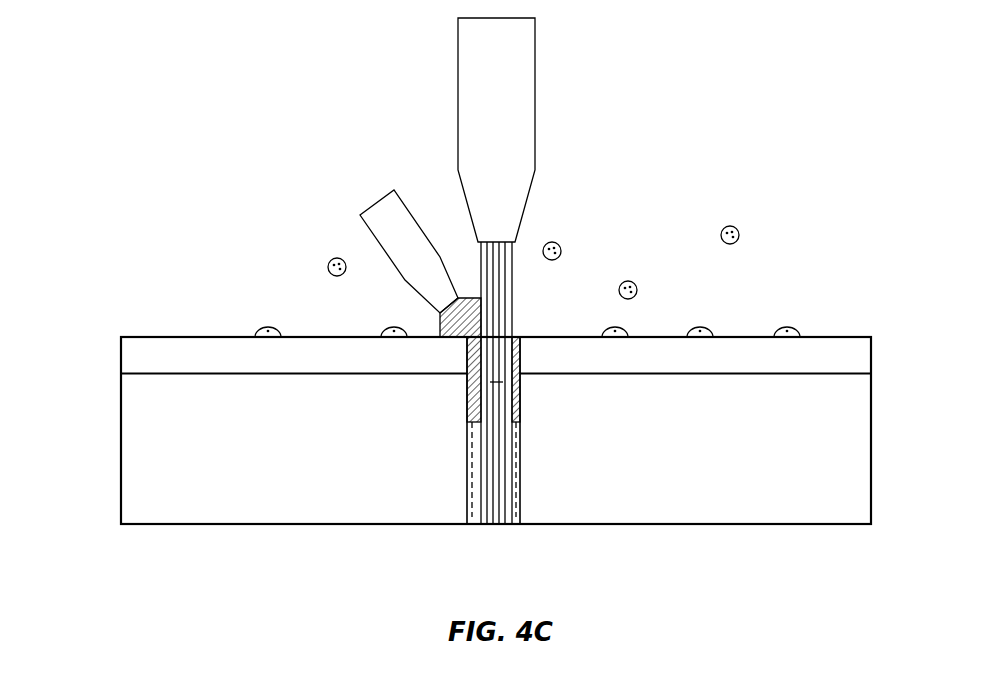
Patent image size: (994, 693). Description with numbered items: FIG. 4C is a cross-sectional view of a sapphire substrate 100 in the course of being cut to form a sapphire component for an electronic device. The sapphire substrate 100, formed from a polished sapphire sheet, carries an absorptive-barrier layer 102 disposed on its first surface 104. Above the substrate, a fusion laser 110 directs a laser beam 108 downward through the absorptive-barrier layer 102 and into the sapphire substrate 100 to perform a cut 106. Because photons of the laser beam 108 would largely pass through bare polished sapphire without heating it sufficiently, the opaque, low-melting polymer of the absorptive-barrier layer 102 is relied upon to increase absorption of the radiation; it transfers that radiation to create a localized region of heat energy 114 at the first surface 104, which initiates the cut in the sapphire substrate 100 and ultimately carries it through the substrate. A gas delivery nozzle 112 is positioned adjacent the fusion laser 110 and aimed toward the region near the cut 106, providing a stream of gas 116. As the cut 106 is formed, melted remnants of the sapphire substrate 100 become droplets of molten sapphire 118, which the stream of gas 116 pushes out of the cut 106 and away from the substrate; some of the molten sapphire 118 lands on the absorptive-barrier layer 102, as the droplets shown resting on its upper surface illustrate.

The sapphire substrate 100 is at (121, 455).
The absorptive-barrier layer 102 is at (121, 355).
The first surface 104 is at (824, 362).
The cut 106 is at (477, 513).
The laser beam 108 is at (512, 315).
The fusion laser 110 is at (457, 62).
The gas delivery nozzle 112 is at (379, 200).
The localized region of heat energy 114 is at (505, 403).
The stream of gas 116 is at (455, 327).
The droplets of molten sapphire 118 is at (331, 258).